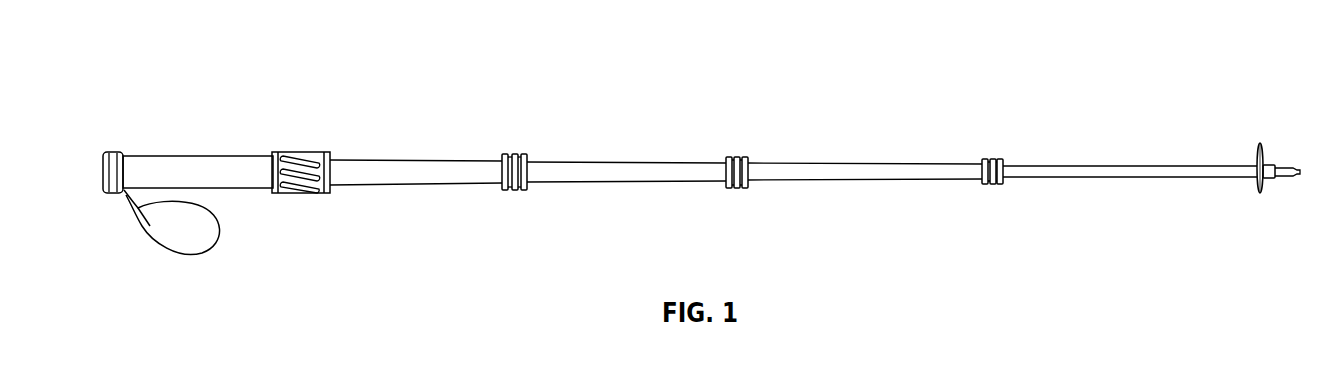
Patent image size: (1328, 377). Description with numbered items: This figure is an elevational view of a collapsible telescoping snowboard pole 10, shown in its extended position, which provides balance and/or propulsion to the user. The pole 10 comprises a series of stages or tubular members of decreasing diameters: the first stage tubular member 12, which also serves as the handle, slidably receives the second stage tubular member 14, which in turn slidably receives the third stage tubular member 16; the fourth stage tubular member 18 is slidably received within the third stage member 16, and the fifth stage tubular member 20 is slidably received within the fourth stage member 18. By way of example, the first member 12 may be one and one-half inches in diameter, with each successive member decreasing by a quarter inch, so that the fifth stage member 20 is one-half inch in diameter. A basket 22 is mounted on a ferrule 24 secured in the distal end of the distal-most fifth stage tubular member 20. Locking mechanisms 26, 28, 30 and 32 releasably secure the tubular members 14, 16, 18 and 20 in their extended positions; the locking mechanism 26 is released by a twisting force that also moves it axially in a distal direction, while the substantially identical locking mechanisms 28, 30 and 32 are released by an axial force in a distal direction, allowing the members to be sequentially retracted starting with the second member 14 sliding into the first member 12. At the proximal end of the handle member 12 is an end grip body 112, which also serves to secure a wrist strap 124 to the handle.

The collapsible telescoping snowboard pole 10 is at (160, 56).
The first stage tubular member 12 is at (188, 155).
The second stage tubular member 14 is at (410, 160).
The third stage tubular member 16 is at (622, 162).
The fourth stage tubular member 18 is at (865, 163).
The fifth stage tubular member 20 is at (1127, 165).
The basket 22 is at (1262, 150).
The ferrule 24 is at (1280, 178).
The locking mechanism 26 is at (298, 194).
The locking mechanism 28 is at (515, 192).
The locking mechanism 30 is at (735, 190).
The locking mechanism 32 is at (993, 187).
The end grip body 112 is at (114, 151).
The wrist strap 124 is at (185, 253).